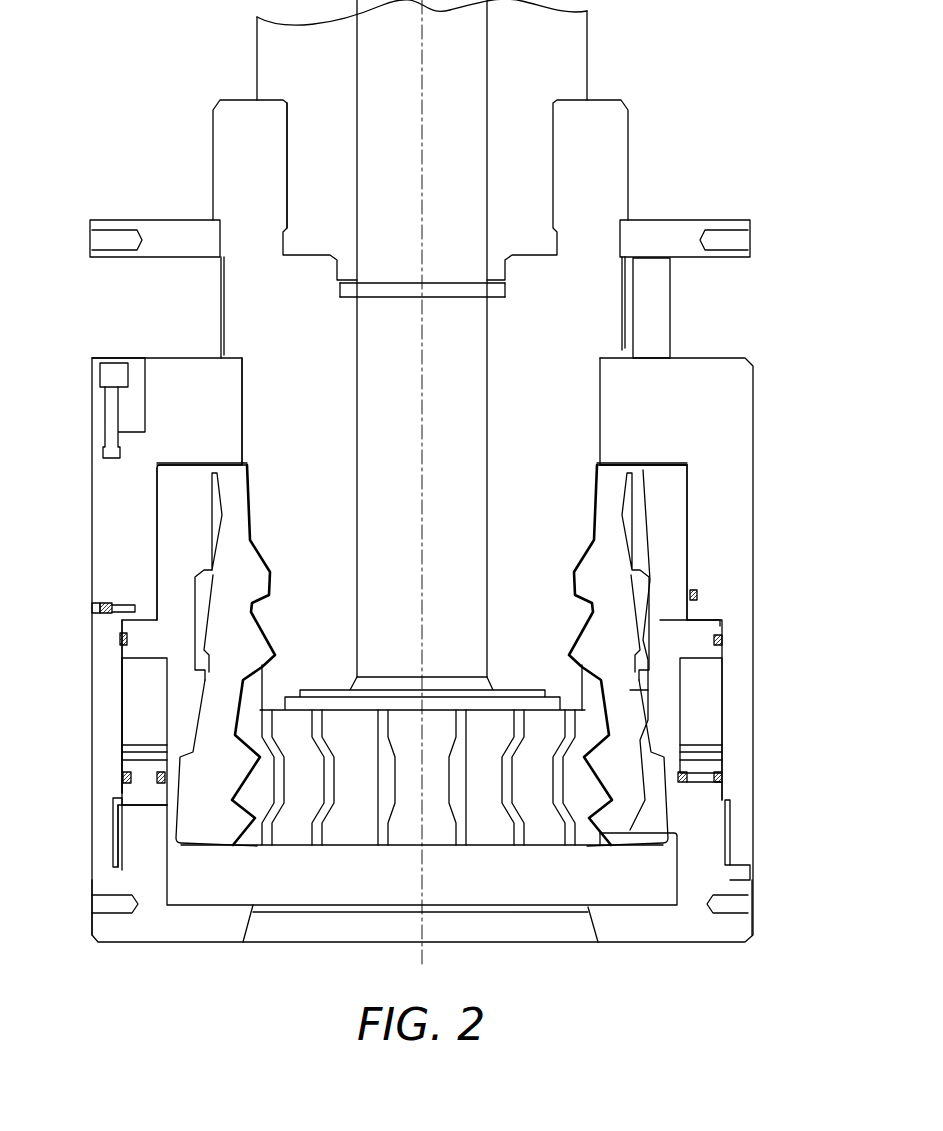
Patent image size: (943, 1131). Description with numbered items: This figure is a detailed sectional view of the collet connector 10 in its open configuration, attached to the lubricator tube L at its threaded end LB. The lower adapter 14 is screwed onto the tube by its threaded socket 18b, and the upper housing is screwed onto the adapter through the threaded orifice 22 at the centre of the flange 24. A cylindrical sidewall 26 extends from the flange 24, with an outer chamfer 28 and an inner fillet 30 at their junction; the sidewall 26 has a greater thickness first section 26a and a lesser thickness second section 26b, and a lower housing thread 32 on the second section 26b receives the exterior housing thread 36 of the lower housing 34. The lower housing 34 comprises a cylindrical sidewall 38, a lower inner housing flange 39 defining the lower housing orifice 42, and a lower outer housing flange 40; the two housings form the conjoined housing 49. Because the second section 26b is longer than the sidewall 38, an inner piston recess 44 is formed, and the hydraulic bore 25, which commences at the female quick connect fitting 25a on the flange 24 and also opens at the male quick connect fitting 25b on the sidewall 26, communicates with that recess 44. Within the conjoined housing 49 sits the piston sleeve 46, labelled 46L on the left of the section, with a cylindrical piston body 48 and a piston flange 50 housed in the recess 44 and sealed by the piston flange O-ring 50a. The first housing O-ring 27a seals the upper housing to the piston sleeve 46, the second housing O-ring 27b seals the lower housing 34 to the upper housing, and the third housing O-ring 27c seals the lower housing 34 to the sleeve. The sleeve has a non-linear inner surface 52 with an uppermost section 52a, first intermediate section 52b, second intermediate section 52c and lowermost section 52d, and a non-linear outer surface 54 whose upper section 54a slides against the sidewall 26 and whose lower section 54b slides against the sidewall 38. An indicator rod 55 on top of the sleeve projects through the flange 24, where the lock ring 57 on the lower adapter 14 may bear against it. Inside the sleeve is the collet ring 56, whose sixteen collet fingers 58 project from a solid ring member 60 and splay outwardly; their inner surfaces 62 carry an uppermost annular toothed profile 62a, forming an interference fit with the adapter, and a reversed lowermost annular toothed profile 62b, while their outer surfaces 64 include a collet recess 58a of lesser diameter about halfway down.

The lubricator tube L is at (582, 40).
The threaded end LB is at (525, 160).
The collet connector 10 is at (205, 962).
The lower adapter 14 is at (210, 147).
The threaded socket 18b is at (282, 127).
The threaded orifice 22 is at (607, 407).
The flange 24 is at (709, 378).
The hydraulic bore 25 is at (95, 408).
The female quick connect fitting 25a is at (95, 375).
The male quick connect fitting 25b is at (92, 613).
The cylindrical sidewall 26 is at (730, 498).
The greater thickness first section 26a is at (160, 548).
The lesser thickness second section 26b is at (115, 663).
The first housing O-ring 27a is at (695, 597).
The second housing O-ring 27b is at (690, 780).
The third housing O-ring 27c is at (720, 786).
The outer chamfer 28 is at (750, 358).
The fillet 30 is at (687, 467).
The lower housing thread 32 is at (727, 818).
The lower housing 34 is at (738, 930).
The exterior housing thread 36 is at (727, 841).
The cylindrical sidewall 38 is at (120, 821).
The lower inner housing flange 39 is at (630, 930).
The lower outer housing flange 40 is at (112, 930).
The lower housing orifice 42 is at (497, 930).
The inner piston recess 44 is at (707, 723).
The piston sleeve 46 is at (667, 575).
The sleeve 46L is at (165, 594).
The cylindrical piston body 48 is at (180, 720).
The conjoined housing 49 is at (768, 712).
The piston flange 50 is at (712, 653).
The piston flange O-ring 50a is at (722, 642).
The inner surface 52 is at (195, 600).
The uppermost section 52a is at (205, 497).
The first intermediate section 52b is at (692, 610).
The second intermediate section 52c is at (713, 747).
The lowermost section 52d is at (160, 779).
The outer surface 54 is at (687, 528).
The upper section 54a is at (205, 522).
The lower section 54b is at (160, 746).
The indicator rod 55 is at (673, 296).
The collet ring 56 is at (207, 850).
The lock ring 57 is at (690, 227).
The collet fingers 58 is at (355, 840).
The collet recess 58a is at (640, 688).
The ring member 60 is at (228, 478).
The inner surfaces 62 is at (255, 842).
The uppermost annular toothed profile 62a is at (266, 593).
The lowermost annular toothed profile 62b is at (605, 842).
The outer surfaces 64 is at (165, 850).